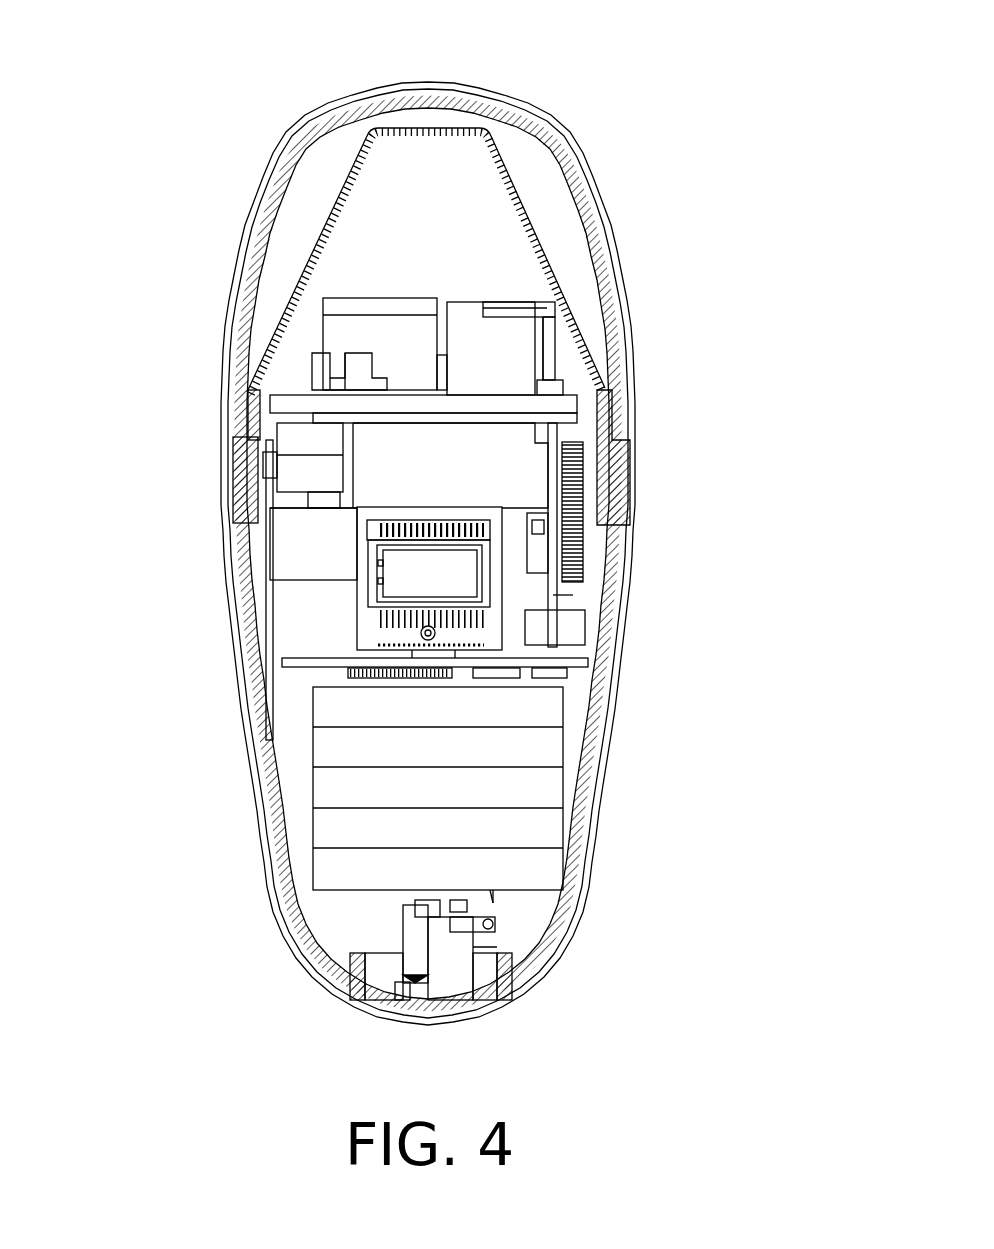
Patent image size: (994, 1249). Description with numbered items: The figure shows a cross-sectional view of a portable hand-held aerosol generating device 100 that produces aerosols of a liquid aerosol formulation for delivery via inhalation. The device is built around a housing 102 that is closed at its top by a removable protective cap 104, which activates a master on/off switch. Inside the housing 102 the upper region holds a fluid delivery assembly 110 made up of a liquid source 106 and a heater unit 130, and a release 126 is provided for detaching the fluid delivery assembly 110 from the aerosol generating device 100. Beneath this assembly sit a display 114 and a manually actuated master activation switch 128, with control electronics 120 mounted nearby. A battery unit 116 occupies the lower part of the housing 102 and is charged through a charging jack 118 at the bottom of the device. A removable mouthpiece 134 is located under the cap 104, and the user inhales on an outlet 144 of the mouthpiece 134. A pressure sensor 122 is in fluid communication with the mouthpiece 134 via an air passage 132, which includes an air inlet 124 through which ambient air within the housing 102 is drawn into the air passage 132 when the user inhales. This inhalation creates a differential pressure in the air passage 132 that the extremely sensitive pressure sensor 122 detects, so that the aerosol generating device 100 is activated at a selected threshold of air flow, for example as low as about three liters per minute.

The aerosol generating device 100 is at (732, 127).
The housing 102 is at (245, 740).
The removable protective cap 104 is at (330, 112).
The liquid source 106 is at (328, 300).
The fluid delivery assembly 110 is at (410, 478).
The display 114 is at (375, 634).
The battery unit 116 is at (407, 830).
The charging jack 118 is at (420, 970).
The control electronics 120 is at (569, 684).
The pressure sensor 122 is at (566, 624).
The air inlet 124 is at (584, 597).
The release 126 is at (634, 470).
The manually actuated master activation switch 128 is at (373, 628).
The heater unit 130 is at (497, 362).
The air passage 132 is at (551, 308).
The removable mouthpiece 134 is at (437, 228).
The outlet 144 is at (458, 126).